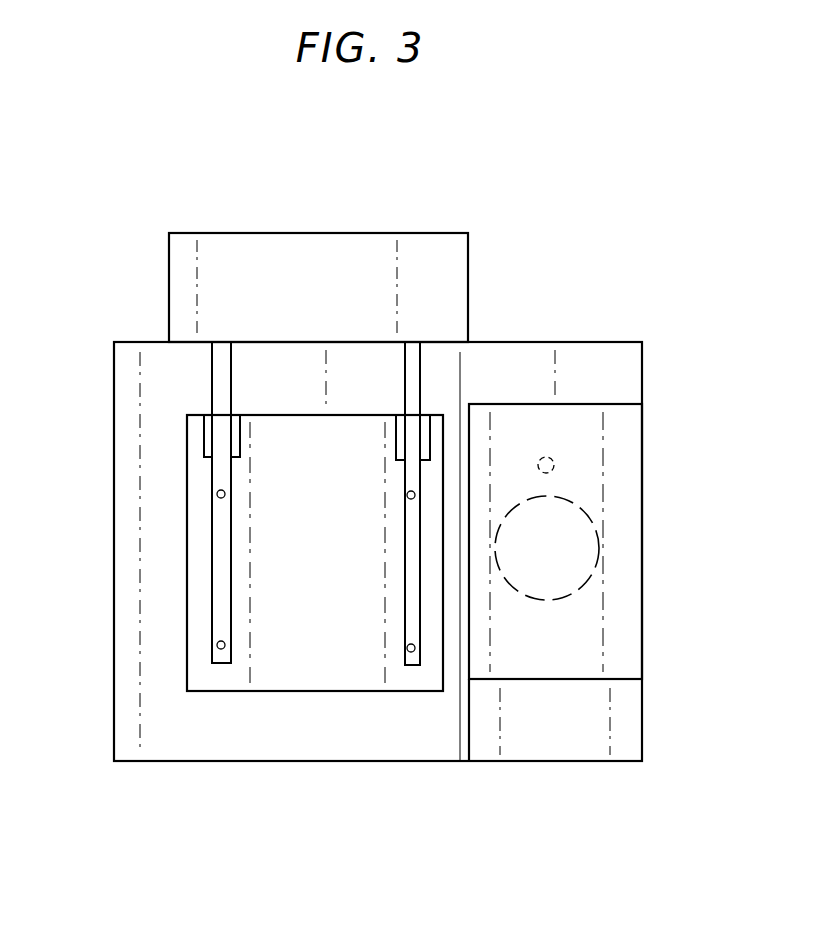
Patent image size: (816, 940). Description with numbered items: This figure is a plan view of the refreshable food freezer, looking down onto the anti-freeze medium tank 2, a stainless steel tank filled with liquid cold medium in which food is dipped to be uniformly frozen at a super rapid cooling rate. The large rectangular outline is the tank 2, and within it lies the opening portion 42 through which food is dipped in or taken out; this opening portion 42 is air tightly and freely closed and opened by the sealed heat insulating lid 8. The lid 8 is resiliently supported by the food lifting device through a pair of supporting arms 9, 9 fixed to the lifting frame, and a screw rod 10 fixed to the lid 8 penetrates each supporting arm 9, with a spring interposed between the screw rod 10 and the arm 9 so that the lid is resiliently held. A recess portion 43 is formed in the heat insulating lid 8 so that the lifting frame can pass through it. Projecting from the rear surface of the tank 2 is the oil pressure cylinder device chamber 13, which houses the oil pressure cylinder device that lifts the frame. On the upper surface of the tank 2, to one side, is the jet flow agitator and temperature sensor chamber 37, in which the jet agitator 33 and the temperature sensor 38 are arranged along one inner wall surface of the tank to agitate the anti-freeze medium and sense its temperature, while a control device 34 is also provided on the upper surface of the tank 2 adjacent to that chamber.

The anti-freeze medium tank 2 is at (113, 437).
The sealed heat insulating lid 8 is at (277, 673).
The supporting arm 9 is at (212, 573).
The screw rod 10 is at (217, 494).
The oil pressure cylinder device chamber 13 is at (442, 245).
The jet agitator 33 is at (588, 512).
The control device 34 is at (580, 737).
The jet flow agitator and temperature sensor chamber 37 is at (620, 632).
The temperature sensor 38 is at (554, 465).
The opening portion of the anti-freeze medium tank 42 is at (360, 693).
The recess portion of sealed heat insulating lid 43 is at (208, 435).